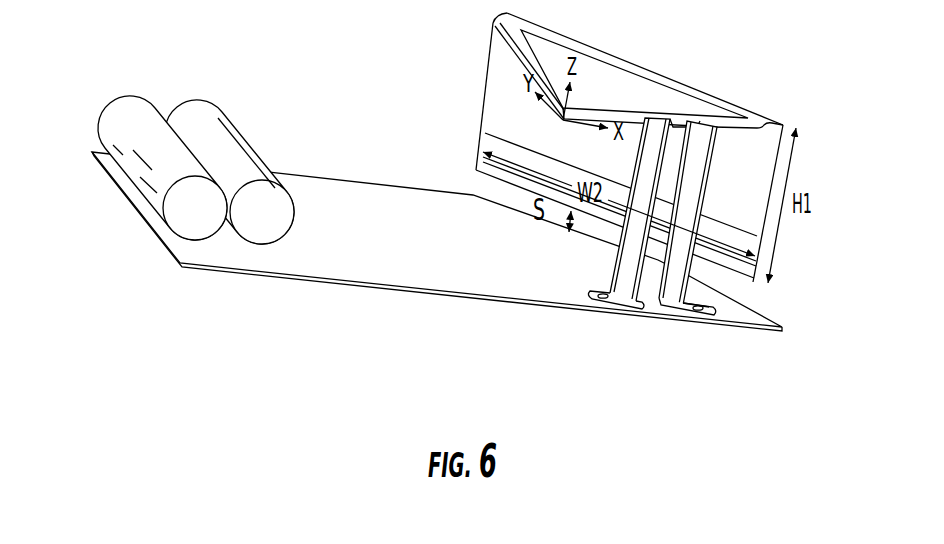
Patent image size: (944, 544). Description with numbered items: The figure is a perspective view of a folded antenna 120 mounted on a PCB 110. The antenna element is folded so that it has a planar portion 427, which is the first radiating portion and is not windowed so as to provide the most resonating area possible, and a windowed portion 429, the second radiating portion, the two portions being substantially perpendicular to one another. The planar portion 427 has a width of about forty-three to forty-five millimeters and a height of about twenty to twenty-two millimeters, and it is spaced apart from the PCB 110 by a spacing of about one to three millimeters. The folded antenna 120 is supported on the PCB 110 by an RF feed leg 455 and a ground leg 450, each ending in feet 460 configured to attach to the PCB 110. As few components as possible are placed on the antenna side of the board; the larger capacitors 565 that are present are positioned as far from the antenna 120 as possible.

The PCB 110 is at (408, 255).
The larger capacitors 565 is at (250, 218).
The folded antenna 120 is at (653, 147).
The windowed portion 429 is at (691, 88).
The planar portion 427 is at (773, 252).
The RF feed leg 455 is at (614, 268).
The ground leg 450 is at (703, 282).
The feet 460 is at (683, 312).